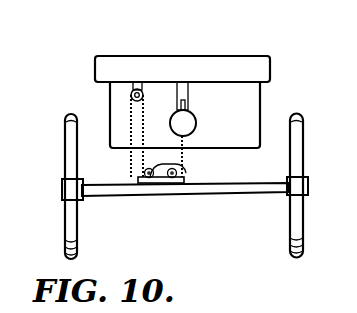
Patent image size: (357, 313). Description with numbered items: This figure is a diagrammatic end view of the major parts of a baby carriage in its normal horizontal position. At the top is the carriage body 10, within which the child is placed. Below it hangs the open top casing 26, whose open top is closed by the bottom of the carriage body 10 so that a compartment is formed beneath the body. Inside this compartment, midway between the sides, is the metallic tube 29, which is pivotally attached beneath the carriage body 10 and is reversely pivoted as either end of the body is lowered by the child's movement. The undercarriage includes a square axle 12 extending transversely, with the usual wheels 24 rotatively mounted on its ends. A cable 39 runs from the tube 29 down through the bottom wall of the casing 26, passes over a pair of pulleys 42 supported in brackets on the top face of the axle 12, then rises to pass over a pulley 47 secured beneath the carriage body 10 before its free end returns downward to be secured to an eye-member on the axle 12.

The carriage body 10 is at (234, 63).
The square axle 12 is at (262, 190).
The wheel 24 is at (69, 147).
The open top casing 26 is at (243, 110).
The metallic tube 29 is at (190, 127).
The cable 39 is at (131, 160).
The pulley 42 is at (182, 169).
The pulley 47 is at (131, 93).